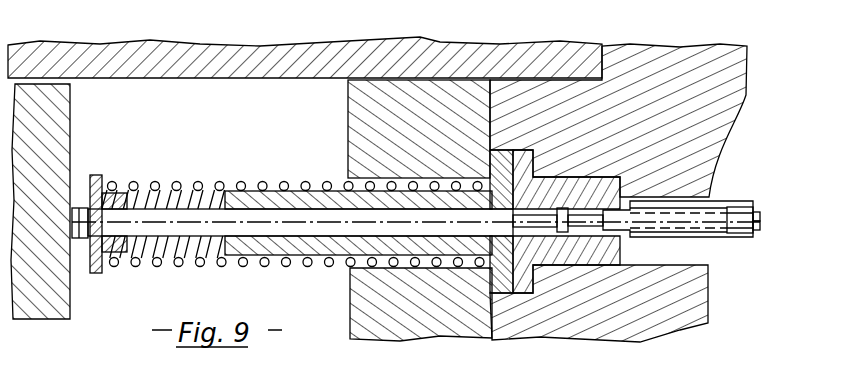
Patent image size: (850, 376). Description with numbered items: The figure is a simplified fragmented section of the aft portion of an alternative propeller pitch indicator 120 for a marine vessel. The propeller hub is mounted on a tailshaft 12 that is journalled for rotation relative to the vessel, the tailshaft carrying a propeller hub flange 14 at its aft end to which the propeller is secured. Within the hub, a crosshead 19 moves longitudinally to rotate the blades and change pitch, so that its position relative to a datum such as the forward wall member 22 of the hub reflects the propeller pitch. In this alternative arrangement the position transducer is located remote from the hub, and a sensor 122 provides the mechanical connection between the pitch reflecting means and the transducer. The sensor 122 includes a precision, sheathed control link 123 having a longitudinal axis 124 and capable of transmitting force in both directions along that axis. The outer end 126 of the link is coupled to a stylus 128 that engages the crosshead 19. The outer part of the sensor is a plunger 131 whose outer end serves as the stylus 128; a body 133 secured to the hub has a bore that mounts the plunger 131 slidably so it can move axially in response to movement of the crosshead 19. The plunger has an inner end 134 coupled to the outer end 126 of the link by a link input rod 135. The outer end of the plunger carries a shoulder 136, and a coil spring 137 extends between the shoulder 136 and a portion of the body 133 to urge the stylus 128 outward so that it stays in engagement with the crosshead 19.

The tailshaft 12 is at (706, 284).
The propeller hub flange 14 is at (743, 80).
The crosshead 19 is at (62, 304).
The forward wall member 22 is at (348, 114).
The pitch indicator 120 is at (202, 281).
The sensor 122 is at (765, 239).
The control link 123 is at (765, 225).
The longitudinal axis 124 is at (759, 217).
The outer end 126 is at (705, 224).
The stylus 128 is at (78, 207).
The plunger 131 is at (173, 230).
The body 133 is at (302, 255).
The inner end 134 is at (541, 190).
The link input rod 135 is at (593, 225).
The shoulder 136 is at (103, 193).
The coil spring 137 is at (176, 184).